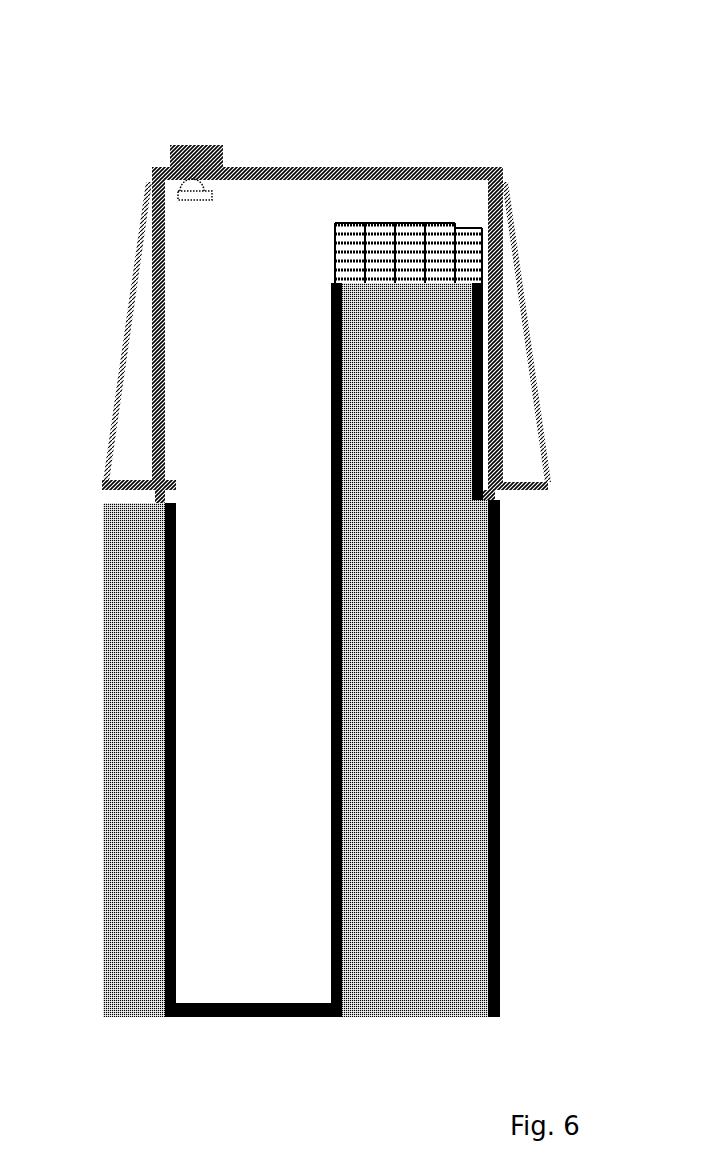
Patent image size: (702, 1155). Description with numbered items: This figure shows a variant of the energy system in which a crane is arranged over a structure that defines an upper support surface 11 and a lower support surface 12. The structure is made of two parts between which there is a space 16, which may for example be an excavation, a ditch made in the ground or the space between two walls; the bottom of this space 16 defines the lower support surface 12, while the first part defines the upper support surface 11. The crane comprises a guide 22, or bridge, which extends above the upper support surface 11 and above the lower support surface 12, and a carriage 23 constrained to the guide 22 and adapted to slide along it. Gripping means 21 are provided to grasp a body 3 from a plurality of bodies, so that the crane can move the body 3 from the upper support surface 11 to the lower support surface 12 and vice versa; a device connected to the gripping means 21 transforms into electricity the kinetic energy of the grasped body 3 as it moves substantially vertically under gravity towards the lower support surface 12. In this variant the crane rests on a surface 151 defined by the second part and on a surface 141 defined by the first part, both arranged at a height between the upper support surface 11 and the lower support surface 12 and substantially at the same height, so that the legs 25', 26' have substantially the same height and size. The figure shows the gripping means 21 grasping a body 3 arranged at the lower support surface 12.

The body 3 is at (197, 193).
The upper support surface 11 is at (331, 283).
The lower support surface 12 is at (205, 1005).
The space 16 is at (250, 739).
The gripping means 21 is at (205, 182).
The guide 22 is at (433, 167).
The carriage 23 is at (195, 157).
The leg 25' is at (116, 294).
The leg 26' is at (531, 296).
The surface 141 is at (483, 497).
The surface 151 is at (132, 503).